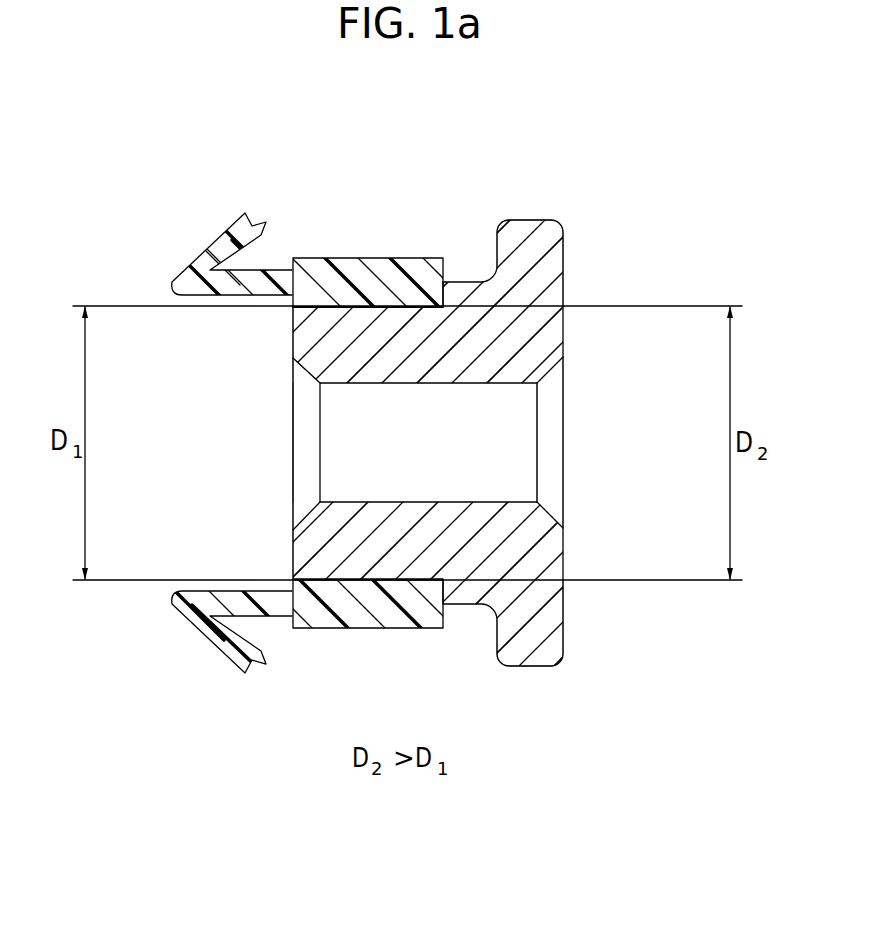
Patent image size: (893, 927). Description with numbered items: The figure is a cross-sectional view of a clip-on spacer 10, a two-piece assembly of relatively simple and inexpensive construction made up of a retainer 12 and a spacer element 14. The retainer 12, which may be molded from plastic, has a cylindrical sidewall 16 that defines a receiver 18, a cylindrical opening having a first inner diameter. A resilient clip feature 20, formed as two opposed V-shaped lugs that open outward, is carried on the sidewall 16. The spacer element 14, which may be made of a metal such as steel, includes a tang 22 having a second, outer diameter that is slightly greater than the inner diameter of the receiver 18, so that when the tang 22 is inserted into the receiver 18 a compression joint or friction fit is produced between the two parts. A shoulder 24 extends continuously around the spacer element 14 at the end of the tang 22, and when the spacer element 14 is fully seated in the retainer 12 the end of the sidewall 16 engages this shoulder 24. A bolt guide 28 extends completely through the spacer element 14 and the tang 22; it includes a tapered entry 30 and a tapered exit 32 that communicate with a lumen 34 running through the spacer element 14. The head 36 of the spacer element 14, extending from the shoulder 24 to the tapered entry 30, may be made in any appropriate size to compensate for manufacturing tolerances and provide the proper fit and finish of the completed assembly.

The clip-on spacer 10 is at (555, 177).
The retainer 12 is at (345, 265).
The spacer element 14 is at (551, 268).
The cylindrical sidewall 16 is at (298, 344).
The receiver 18 is at (277, 543).
The resilient clip feature 20 is at (185, 270).
The tang 22 is at (380, 306).
The shoulder 24 is at (426, 607).
The bolt guide 28 is at (573, 447).
The tapered entry 30 is at (556, 481).
The tapered exit 32 is at (293, 436).
The lumen 34 is at (405, 455).
The head 36 is at (540, 652).